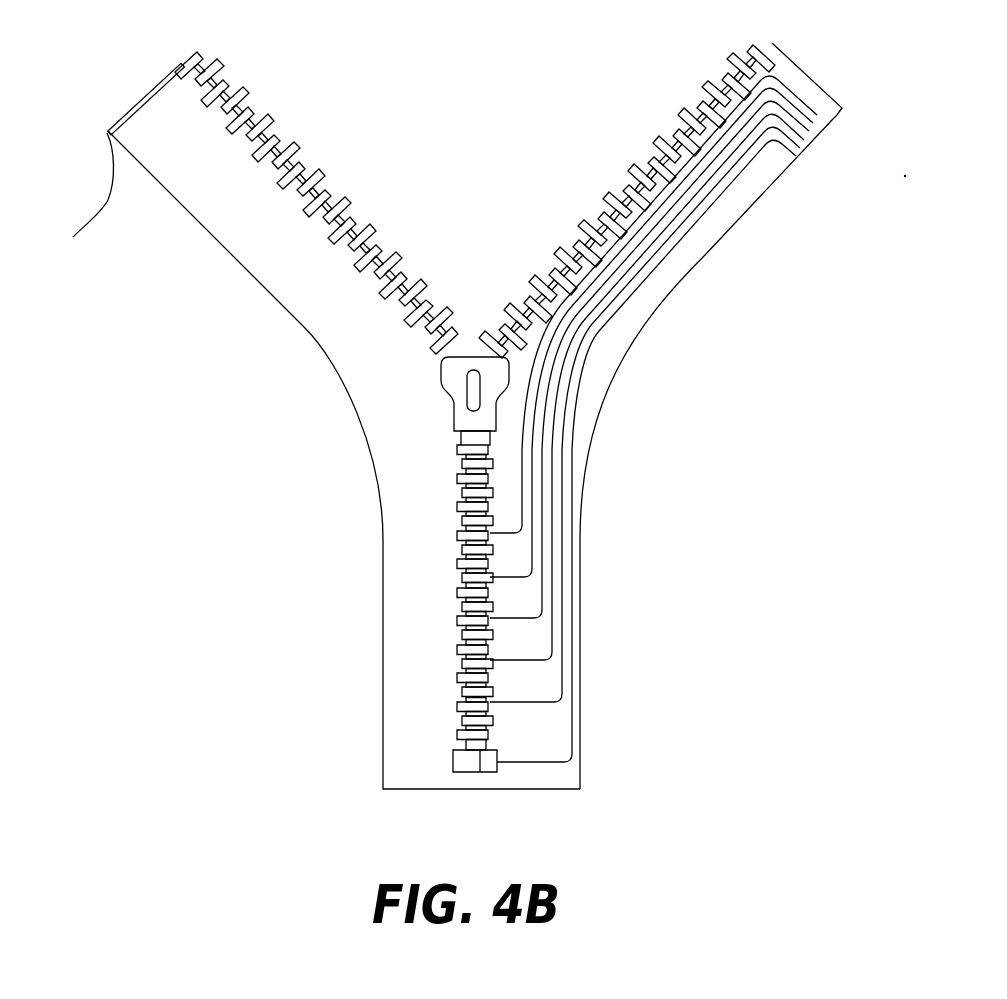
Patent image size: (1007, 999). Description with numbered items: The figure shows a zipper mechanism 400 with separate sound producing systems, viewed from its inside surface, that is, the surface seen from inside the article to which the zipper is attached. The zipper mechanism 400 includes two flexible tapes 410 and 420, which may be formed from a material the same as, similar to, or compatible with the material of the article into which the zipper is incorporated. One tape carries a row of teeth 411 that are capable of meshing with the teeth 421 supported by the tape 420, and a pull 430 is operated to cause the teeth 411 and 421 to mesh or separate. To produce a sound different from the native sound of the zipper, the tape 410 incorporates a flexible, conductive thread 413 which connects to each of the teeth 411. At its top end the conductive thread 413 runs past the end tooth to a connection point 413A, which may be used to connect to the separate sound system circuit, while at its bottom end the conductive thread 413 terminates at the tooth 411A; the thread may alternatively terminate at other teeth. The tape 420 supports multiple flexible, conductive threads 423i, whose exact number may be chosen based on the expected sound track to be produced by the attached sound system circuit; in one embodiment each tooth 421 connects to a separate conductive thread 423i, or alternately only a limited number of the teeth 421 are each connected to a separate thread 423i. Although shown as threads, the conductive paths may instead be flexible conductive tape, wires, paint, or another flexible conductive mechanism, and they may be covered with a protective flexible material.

The zipper mechanism 400 is at (456, 68).
The flexible tape 410 is at (312, 318).
The teeth 411 is at (320, 173).
The tooth 411A is at (197, 55).
The flexible, conductive thread 413 is at (140, 95).
The connection point 413A is at (90, 217).
The flexible tape 420 is at (567, 775).
The teeth 421 is at (578, 222).
The flexible, conductive threads 423i is at (822, 135).
The pull 430 is at (470, 357).